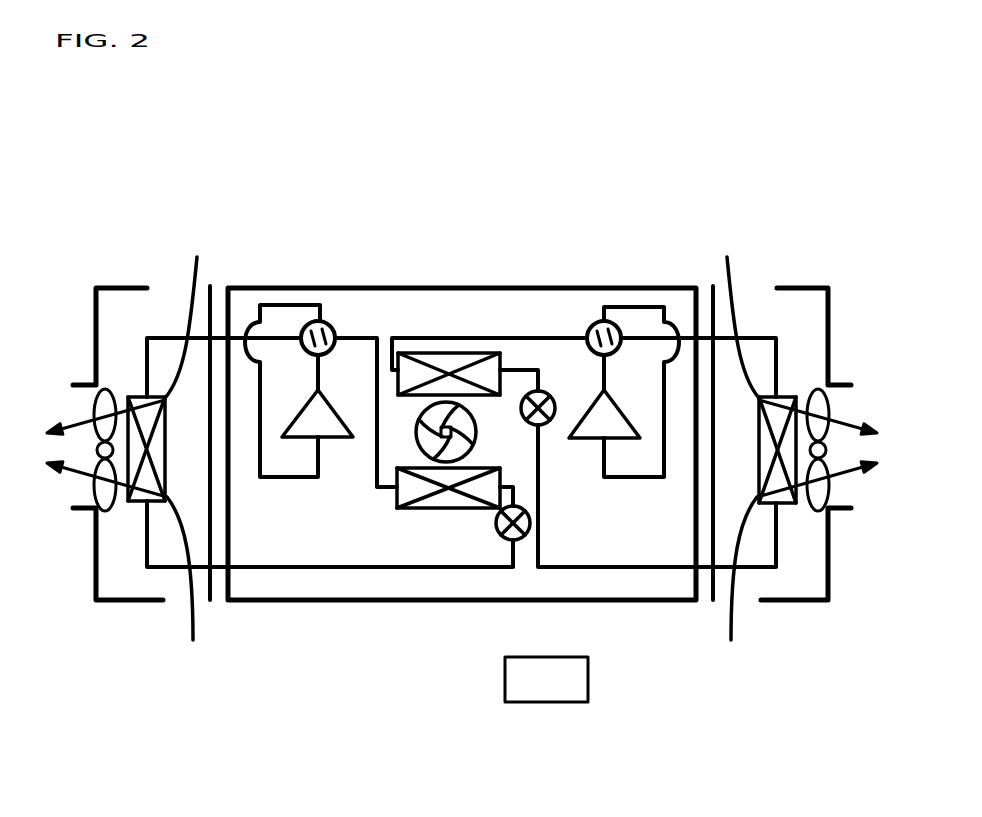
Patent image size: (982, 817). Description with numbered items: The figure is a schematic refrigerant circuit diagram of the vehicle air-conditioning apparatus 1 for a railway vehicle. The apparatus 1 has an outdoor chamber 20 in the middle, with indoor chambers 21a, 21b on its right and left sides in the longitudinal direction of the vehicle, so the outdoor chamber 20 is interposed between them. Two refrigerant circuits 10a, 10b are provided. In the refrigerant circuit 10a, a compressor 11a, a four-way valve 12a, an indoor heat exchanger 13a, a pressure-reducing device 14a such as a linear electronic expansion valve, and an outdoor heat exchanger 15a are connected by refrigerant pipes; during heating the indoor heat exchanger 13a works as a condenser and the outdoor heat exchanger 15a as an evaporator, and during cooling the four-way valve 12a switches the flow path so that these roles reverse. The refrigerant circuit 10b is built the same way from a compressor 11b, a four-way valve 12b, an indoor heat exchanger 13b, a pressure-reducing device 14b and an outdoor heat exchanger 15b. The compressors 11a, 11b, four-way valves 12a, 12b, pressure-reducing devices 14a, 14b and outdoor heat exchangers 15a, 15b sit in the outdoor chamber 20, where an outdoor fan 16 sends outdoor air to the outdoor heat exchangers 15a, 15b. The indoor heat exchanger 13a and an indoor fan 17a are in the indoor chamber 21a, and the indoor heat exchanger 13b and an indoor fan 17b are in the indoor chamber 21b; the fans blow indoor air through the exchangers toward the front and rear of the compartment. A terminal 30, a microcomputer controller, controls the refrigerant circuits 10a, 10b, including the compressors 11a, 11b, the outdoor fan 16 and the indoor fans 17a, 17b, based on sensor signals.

The vehicle air-conditioning apparatus 1 is at (650, 200).
The refrigerant circuit 10a is at (528, 338).
The refrigerant circuit 10b is at (402, 570).
The compressor 11a is at (592, 442).
The compressor 11b is at (340, 440).
The four-way valve 12a is at (600, 320).
The four-way valve 12b is at (330, 320).
The indoor heat exchanger 13a is at (785, 396).
The indoor heat exchanger 13b is at (140, 396).
The pressure-reducing device 14a is at (552, 392).
The pressure-reducing device 14b is at (497, 510).
The outdoor heat exchanger 15a is at (448, 353).
The outdoor heat exchanger 15b is at (430, 510).
The outdoor fan 16 is at (477, 432).
The indoor fan 17a is at (818, 512).
The indoor fan 17b is at (105, 512).
The outdoor chamber 20 is at (415, 286).
The indoor chamber 21a is at (815, 286).
The indoor chamber 21b is at (110, 286).
The terminal 30 is at (547, 703).